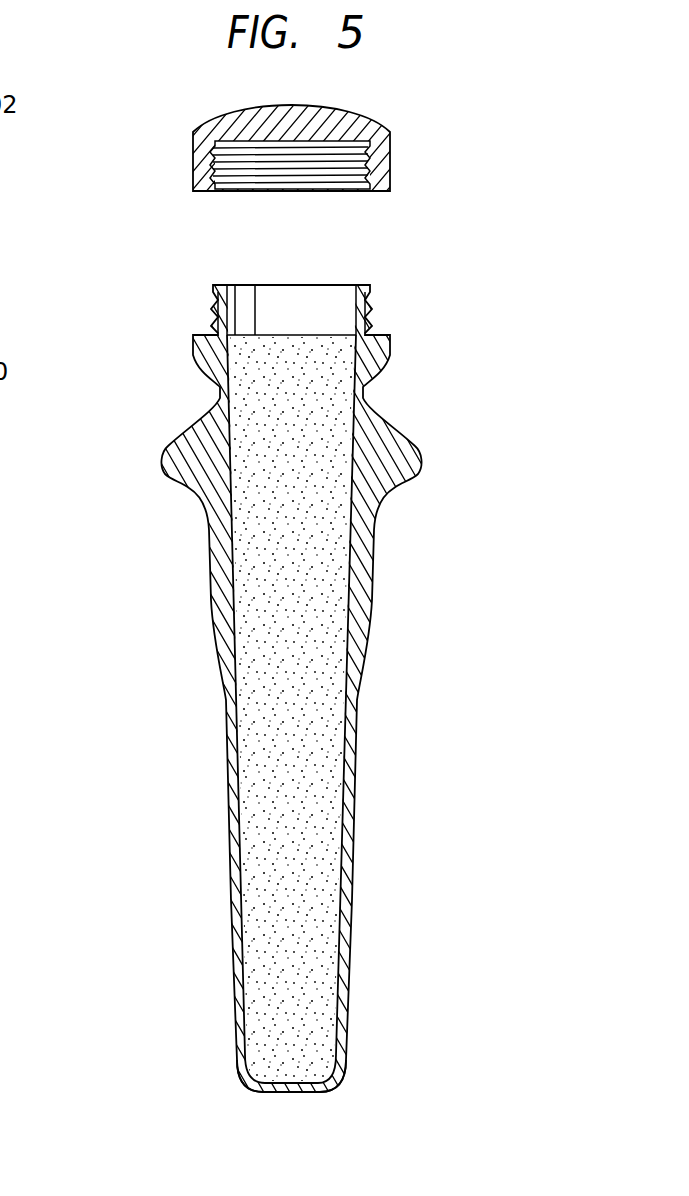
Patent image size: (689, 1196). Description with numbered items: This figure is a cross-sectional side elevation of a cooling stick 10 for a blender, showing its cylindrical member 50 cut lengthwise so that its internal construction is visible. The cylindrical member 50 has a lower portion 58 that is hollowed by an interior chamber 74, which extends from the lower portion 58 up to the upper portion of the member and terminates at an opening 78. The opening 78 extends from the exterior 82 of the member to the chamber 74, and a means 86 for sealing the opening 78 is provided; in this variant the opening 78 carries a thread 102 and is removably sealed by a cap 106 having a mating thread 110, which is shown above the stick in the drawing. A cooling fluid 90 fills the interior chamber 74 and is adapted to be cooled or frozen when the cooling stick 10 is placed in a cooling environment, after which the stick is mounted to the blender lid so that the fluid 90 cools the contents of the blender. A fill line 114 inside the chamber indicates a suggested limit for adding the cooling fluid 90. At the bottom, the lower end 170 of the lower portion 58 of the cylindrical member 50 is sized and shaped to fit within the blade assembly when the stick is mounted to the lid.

The cooling stick 10 is at (153, 691).
The cylindrical member 50 is at (201, 808).
The lower portion 58 is at (212, 618).
The interior chamber 74 is at (272, 481).
The opening 78 is at (332, 292).
The exterior 82 is at (232, 892).
The means for sealing the opening 86 is at (392, 153).
The cooling fluid 90 is at (268, 940).
The thread 102 is at (212, 305).
The cap 106 is at (351, 112).
The mating thread 110 is at (228, 178).
The fill line 114 is at (260, 336).
The lower end 170 is at (243, 1075).